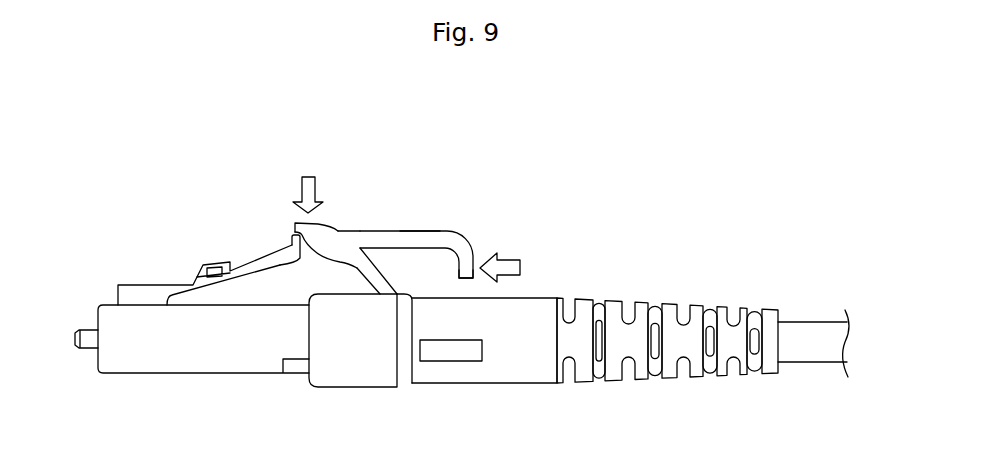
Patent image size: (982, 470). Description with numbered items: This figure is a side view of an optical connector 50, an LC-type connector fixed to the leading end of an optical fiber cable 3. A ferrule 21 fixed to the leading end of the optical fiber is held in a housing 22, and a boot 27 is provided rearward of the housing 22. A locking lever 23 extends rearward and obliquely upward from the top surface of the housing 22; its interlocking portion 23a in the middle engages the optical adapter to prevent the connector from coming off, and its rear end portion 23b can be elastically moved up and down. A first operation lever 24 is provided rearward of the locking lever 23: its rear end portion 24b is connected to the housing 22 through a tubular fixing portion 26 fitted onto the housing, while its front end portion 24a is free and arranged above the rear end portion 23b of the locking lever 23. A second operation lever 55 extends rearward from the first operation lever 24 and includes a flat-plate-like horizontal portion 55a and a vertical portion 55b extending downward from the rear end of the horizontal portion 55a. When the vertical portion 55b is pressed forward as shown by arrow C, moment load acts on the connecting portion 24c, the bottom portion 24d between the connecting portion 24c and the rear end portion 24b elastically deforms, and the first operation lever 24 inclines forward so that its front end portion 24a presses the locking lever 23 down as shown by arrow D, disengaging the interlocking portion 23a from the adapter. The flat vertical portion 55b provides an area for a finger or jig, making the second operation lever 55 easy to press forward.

The optical fiber cable 3 is at (810, 331).
The ferrule 21 is at (83, 335).
The housing 22 is at (209, 362).
The locking lever 23 is at (242, 251).
The interlocking portion 23a is at (228, 260).
The rear end portion 23b is at (293, 233).
The first operation lever 24 is at (322, 219).
The front end portion 24a is at (297, 224).
The rear end portion 24b is at (412, 372).
The connecting portion 24c is at (347, 244).
The bottom portion 24d is at (372, 278).
The fixing portion 26 is at (366, 375).
The boot 27 is at (518, 370).
The optical connector 50 is at (446, 201).
The second operation lever 55 is at (462, 229).
The horizontal portion 55a is at (405, 238).
The vertical portion 55b is at (462, 267).
The arrow C is at (510, 260).
The arrow D is at (304, 185).